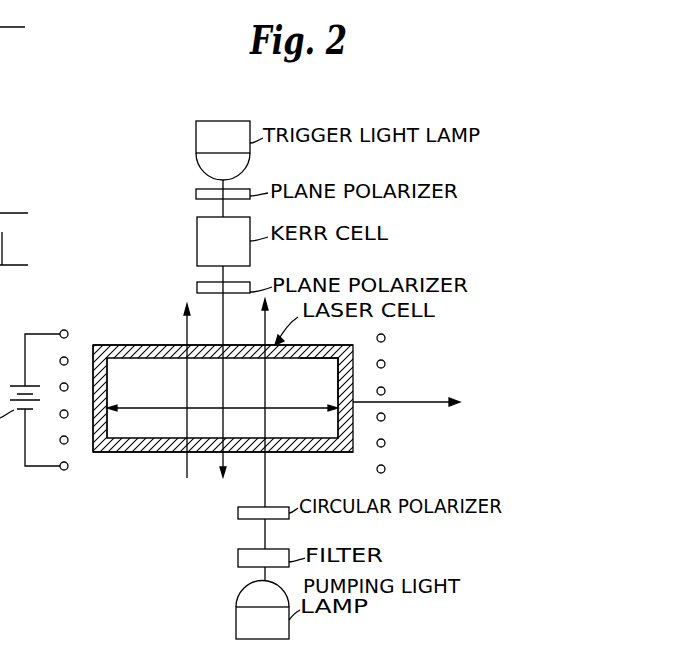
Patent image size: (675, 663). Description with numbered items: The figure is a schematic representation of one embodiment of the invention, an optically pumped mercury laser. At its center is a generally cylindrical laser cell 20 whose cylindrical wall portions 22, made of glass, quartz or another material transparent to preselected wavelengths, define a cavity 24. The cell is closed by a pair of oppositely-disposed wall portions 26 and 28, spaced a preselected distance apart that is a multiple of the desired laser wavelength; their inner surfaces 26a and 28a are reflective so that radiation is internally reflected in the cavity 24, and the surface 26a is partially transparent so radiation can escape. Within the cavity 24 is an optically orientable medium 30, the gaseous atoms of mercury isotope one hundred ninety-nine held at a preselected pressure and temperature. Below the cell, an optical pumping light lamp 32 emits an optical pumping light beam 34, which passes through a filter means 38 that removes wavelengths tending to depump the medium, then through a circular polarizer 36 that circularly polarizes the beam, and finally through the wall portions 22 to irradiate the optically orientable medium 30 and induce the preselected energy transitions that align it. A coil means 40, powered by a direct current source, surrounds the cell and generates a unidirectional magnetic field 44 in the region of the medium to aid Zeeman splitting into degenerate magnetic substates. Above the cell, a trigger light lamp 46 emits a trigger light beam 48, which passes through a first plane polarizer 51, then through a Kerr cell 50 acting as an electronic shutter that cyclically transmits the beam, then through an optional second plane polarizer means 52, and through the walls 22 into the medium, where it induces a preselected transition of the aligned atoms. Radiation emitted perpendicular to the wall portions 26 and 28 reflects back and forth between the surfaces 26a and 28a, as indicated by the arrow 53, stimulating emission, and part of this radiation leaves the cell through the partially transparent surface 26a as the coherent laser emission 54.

The laser cell 20 is at (292, 348).
The cylindrical wall portions 22 is at (178, 346).
The cavity 24 is at (310, 368).
The wall portion 26 is at (357, 431).
The surface 26a is at (338, 392).
The wall portion 28 is at (93, 349).
The surface 28a is at (107, 386).
The optically orientable medium 30 is at (305, 428).
The optical pumping light lamp 32 is at (236, 613).
The optical pumping light beam 34 is at (262, 575).
The circular polarizer 36 is at (238, 515).
The filter means 38 is at (238, 556).
The coil means 40 is at (64, 330).
The unidirectional magnetic field 44 is at (184, 316).
The trigger light lamp 46 is at (196, 141).
The trigger light beam 48 is at (196, 197).
The Kerr cell 50 is at (197, 236).
The first plane polarizer 51 is at (196, 190).
The second plane polarizer means 52 is at (197, 284).
The internal reflection 53 is at (177, 406).
The emission 54 is at (429, 402).